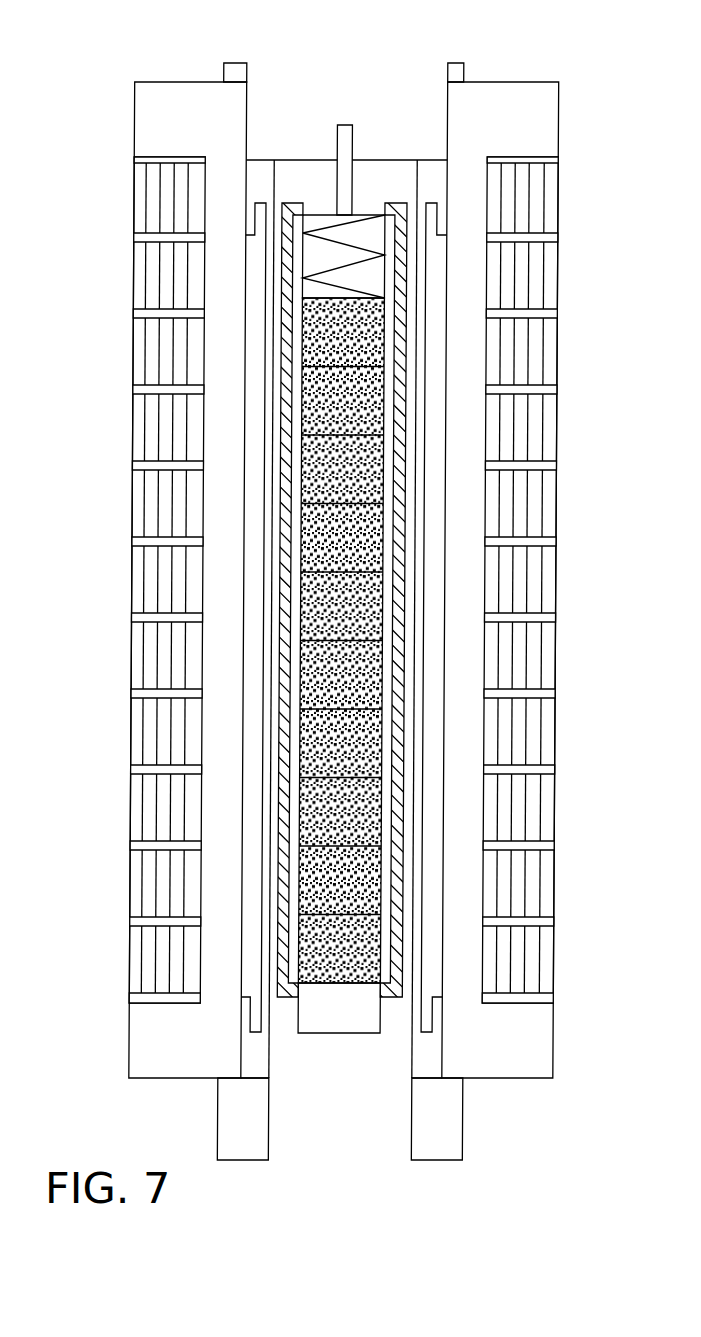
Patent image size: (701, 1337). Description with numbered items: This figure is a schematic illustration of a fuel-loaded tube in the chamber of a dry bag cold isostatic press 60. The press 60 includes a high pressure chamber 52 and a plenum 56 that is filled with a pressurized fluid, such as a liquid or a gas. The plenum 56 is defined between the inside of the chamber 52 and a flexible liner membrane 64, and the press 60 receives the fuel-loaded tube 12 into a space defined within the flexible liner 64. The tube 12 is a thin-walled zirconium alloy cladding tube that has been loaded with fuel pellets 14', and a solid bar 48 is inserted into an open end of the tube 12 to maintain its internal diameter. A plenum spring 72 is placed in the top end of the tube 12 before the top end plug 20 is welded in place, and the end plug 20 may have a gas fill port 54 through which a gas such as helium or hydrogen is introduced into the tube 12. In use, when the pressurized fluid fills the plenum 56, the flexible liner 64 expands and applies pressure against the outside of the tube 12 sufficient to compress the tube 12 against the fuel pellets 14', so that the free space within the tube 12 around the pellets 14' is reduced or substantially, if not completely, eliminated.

The dry bag cold isostatic press 60 is at (580, 73).
The high pressure chamber 52 is at (227, 165).
The plenum 56 is at (438, 985).
The top end plug 20 is at (320, 177).
The gas fill port 54 is at (350, 130).
The plenum spring 72 is at (363, 248).
The fuel pellets 14' is at (466, 640).
The thin-walled Zr alloy tube 12 is at (395, 745).
The solid bar 48 is at (333, 1021).
The flexible liner membrane 64 is at (266, 1062).